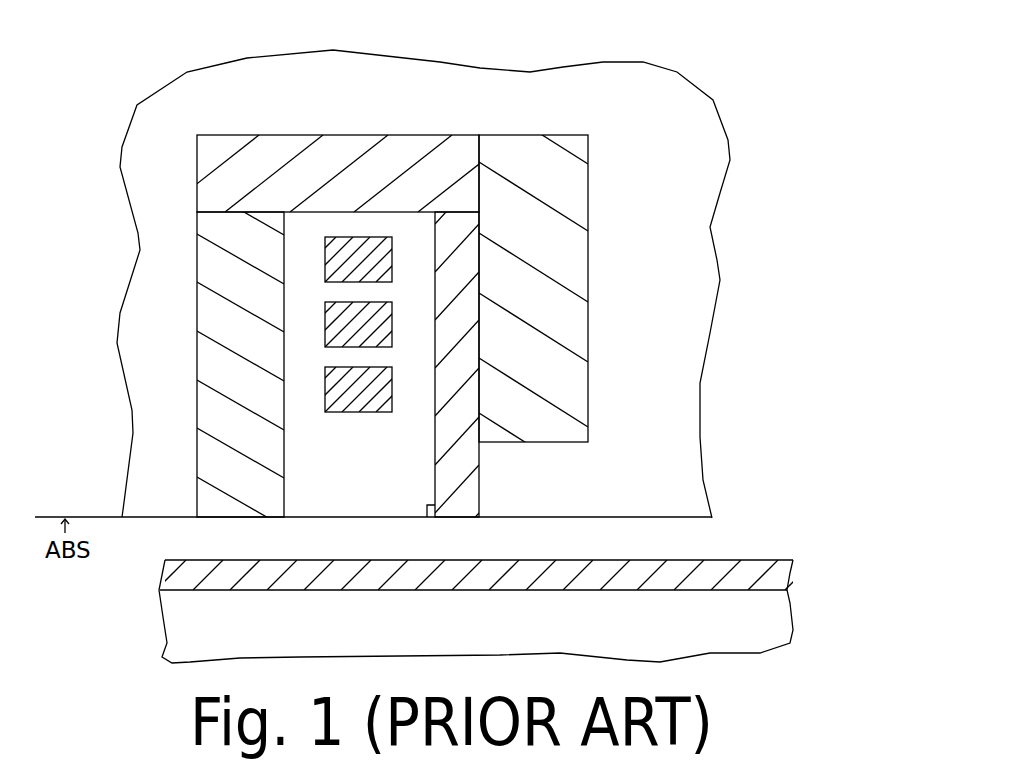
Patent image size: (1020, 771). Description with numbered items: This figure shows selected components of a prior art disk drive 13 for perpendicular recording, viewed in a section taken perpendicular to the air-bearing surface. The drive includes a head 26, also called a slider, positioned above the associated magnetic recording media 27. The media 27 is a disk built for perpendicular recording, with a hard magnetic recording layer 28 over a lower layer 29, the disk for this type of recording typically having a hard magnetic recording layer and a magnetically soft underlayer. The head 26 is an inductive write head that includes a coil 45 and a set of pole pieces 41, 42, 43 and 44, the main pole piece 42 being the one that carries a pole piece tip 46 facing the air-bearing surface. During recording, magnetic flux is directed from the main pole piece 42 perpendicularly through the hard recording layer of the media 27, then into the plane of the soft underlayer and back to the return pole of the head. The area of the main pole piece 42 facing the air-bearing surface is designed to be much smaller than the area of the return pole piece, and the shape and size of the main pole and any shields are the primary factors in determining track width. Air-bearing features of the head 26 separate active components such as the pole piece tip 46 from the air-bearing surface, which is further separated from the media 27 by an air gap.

The disk drive 13 is at (416, 280).
The head 26 is at (683, 95).
The magnetic recording media 27 is at (470, 612).
The magnetic recording layer 28 is at (775, 577).
The disk substrate 29 is at (775, 625).
The pole piece 41 is at (577, 193).
The main pole piece 42 is at (460, 485).
The pole piece 43 is at (213, 303).
The pole piece 44 is at (350, 148).
The coil 45 is at (357, 403).
The pole piece tip 46 is at (430, 518).